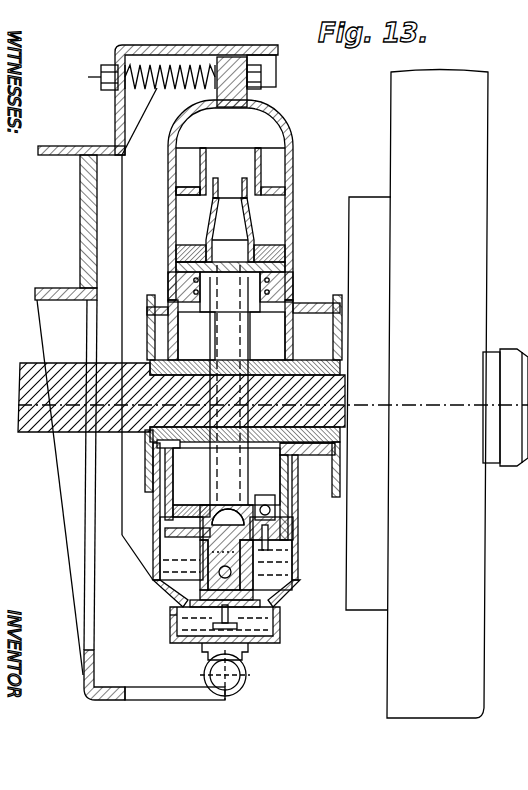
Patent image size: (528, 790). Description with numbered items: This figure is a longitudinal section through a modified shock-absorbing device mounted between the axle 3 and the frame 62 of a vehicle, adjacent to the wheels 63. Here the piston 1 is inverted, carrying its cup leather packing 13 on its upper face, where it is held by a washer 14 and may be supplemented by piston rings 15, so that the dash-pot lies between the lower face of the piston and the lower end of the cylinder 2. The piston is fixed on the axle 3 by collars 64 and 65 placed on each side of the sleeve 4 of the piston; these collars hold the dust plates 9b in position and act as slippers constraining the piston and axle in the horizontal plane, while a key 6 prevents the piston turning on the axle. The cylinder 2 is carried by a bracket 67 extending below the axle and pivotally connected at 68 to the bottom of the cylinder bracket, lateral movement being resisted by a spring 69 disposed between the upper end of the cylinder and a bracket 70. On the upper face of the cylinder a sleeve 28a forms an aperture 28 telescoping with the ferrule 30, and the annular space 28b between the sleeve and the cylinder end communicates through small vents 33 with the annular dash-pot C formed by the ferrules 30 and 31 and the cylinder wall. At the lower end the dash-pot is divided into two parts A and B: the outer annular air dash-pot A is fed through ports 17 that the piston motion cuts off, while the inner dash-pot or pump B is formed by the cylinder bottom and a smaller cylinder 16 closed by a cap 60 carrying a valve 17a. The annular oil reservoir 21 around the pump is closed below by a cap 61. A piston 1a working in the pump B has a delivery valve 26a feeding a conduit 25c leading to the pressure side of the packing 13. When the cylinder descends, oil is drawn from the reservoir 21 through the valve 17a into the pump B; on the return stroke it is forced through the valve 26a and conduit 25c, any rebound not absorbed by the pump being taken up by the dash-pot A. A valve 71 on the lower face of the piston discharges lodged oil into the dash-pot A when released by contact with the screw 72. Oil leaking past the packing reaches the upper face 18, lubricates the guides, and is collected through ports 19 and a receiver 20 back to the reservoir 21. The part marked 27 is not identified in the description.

The piston 1 is at (282, 337).
The piston 1a is at (262, 553).
The cylinder 2 is at (290, 283).
The axle 3 is at (58, 370).
The sleeve 4 is at (196, 336).
The key 6 is at (267, 336).
The dust plates 9b is at (150, 336).
The packing 13 is at (288, 270).
The washer 14 is at (176, 268).
The piston rings 15 is at (310, 300).
The cylinder 16 is at (153, 569).
The ports 17 is at (168, 508).
The valve 17a is at (172, 616).
The upper face 18 is at (284, 326).
The ports 19 is at (280, 460).
The receiver 20 is at (298, 494).
The oil reservoir 21 is at (181, 548).
The conduit 25c is at (226, 330).
The delivery valve 26a is at (178, 600).
The head 27 is at (170, 280).
The aperture 28 is at (230, 171).
The sleeve 28a is at (203, 168).
The annular space 28b is at (270, 163).
The ferrule 30 is at (206, 252).
The ferrule 31 is at (216, 190).
The vents 33 is at (185, 196).
The cap 60 is at (283, 610).
The cap 61 is at (262, 645).
The frame 62 is at (80, 232).
The wheels 63 is at (437, 394).
The collar 64 is at (163, 360).
The collar 65 is at (307, 461).
The bracket 67 is at (92, 614).
The pivotal connection 68 is at (247, 681).
The spring 69 is at (168, 86).
The bracket 70 is at (116, 109).
The valve 71 is at (290, 521).
The screw 72 is at (262, 564).
The outer annular dash-pot A is at (180, 530).
The inner dash-pot or pump B is at (282, 601).
The annular dash-pot C is at (230, 200).